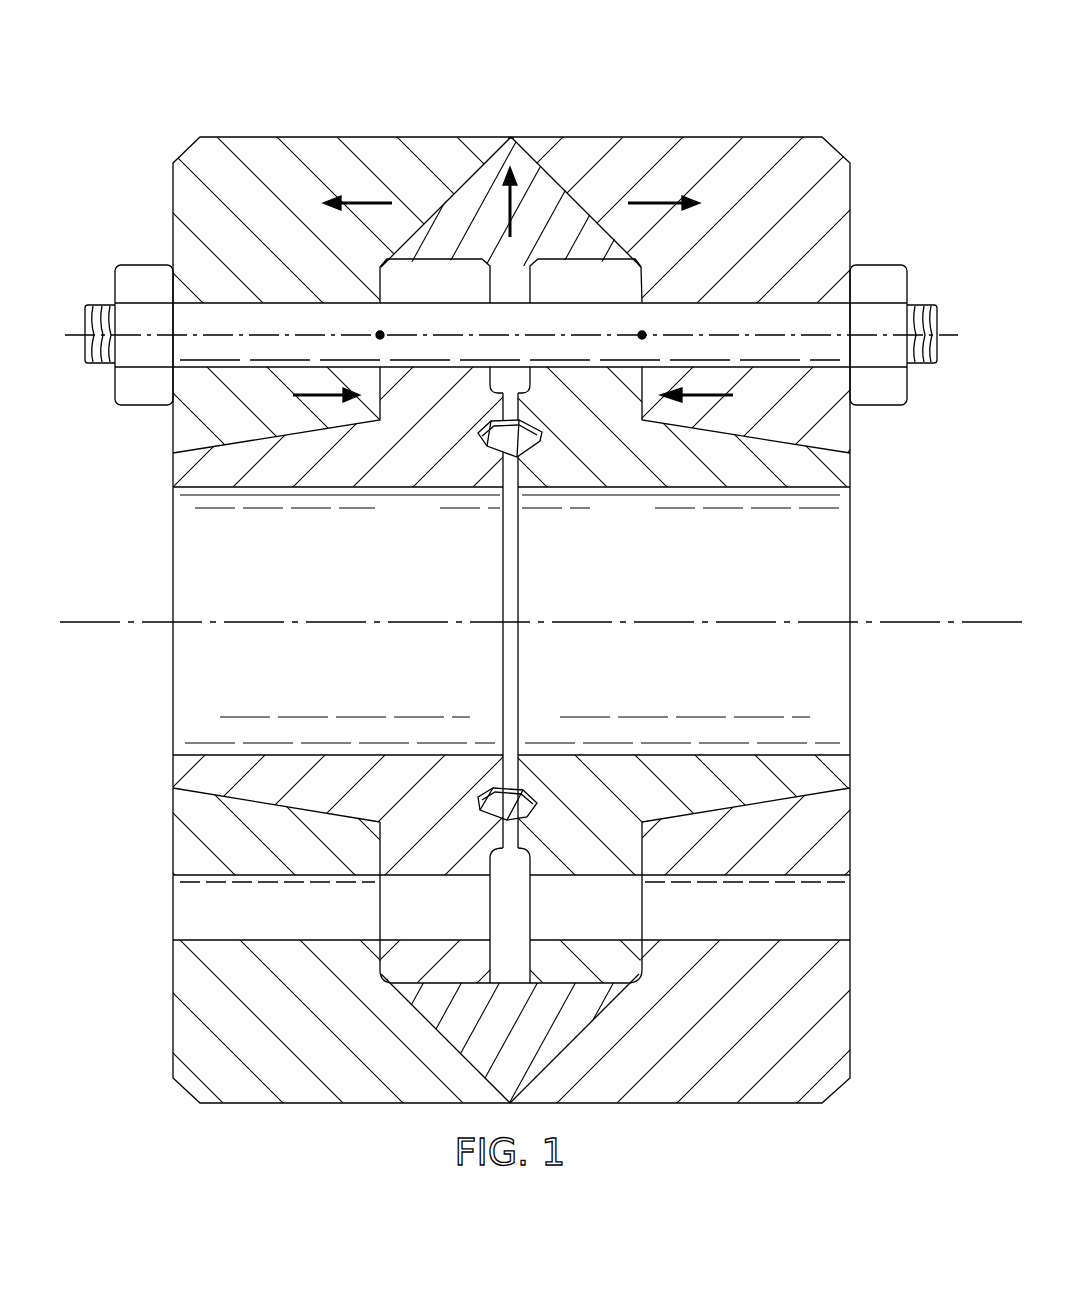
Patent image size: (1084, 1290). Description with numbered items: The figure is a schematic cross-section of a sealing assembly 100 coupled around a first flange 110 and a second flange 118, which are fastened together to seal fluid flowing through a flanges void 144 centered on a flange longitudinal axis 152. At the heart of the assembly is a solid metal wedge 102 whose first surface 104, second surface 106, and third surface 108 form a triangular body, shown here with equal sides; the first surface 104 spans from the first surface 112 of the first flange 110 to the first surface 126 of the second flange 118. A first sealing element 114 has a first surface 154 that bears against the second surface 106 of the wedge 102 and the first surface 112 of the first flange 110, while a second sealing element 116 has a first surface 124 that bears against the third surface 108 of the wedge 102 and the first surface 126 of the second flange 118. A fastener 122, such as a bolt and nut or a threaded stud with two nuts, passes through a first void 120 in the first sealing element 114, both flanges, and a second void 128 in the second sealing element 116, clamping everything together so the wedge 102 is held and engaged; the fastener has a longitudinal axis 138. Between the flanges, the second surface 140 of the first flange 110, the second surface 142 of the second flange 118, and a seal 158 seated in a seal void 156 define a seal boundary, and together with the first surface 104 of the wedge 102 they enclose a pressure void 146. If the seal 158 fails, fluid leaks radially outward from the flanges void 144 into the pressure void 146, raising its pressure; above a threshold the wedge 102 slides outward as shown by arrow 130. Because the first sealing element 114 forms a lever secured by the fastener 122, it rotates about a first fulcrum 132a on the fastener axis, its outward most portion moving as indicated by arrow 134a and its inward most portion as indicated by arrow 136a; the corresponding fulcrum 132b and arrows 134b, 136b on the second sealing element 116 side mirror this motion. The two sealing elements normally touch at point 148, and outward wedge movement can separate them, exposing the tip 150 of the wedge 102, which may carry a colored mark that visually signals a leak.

The sealing assembly 100 is at (695, 75).
The wedge 102 is at (640, 137).
The first surface 104 is at (490, 275).
The second surface 106 is at (455, 137).
The third surface 108 is at (583, 137).
The first flange 110 is at (405, 535).
The first surface 112 is at (383, 418).
The first sealing element 114 is at (252, 137).
The second sealing element 116 is at (764, 137).
The second flange 118 is at (608, 532).
The first void 120 is at (172, 348).
The fastener 122 is at (207, 318).
The first surface 124 is at (641, 262).
The first surface 126 is at (637, 418).
The second void 128 is at (880, 268).
The arrow 130 is at (500, 222).
The first fulcrum 132a is at (378, 336).
The second pivot point 132b is at (644, 336).
The arrow 134a is at (385, 200).
The second lateral displacement direction 134b is at (668, 200).
The arrow 136a is at (293, 392).
The second clamping direction 136b is at (733, 392).
The longitudinal axis 138 is at (80, 333).
The second surface 140 is at (488, 452).
The second surface 142 is at (535, 458).
The flanges void 144 is at (318, 683).
The pressure void 146 is at (533, 378).
The point 148 is at (518, 126).
The tip 150 is at (492, 137).
The flange longitudinal axis 152 is at (930, 624).
The first surface 154 is at (381, 262).
The seal void 156 is at (545, 485).
The seal 158 is at (478, 483).